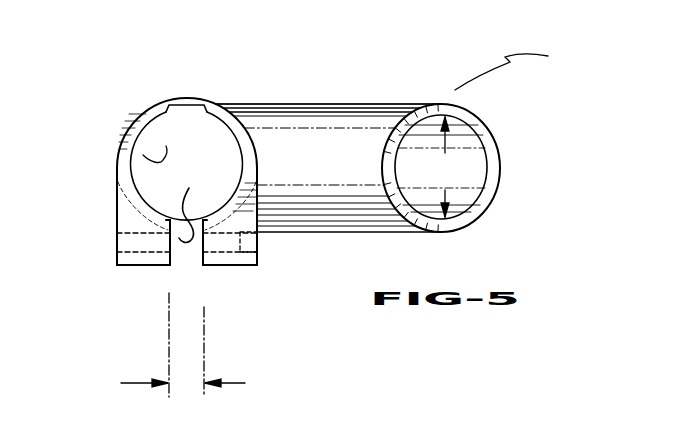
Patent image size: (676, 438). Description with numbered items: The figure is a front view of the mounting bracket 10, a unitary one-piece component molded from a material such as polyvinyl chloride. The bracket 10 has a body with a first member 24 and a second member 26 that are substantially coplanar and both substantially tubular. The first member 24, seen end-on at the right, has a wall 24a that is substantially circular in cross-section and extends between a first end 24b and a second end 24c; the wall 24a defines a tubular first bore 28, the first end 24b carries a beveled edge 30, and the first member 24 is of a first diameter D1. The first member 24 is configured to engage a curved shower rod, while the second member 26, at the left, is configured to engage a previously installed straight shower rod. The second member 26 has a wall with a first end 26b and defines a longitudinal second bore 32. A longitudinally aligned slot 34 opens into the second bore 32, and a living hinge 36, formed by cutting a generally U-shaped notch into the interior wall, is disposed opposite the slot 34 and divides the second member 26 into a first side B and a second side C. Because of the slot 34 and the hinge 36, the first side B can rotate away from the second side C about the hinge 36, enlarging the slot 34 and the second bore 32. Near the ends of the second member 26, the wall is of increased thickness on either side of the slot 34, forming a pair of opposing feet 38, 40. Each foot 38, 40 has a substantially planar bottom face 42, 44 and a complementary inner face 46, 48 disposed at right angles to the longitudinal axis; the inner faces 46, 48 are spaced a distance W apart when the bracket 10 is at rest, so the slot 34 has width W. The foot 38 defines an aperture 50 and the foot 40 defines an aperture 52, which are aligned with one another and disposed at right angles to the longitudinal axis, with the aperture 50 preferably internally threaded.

The mounting bracket 10 is at (515, 68).
The first member 24 is at (303, 103).
The wall 24a is at (343, 117).
The first end 24b is at (492, 132).
The second end 24c is at (233, 104).
The second member 26 is at (125, 127).
The first end 26b is at (158, 110).
The first bore 28 is at (479, 158).
The beveled edge 30 is at (395, 145).
The second bore 32 is at (143, 155).
The slot 34 is at (188, 205).
The living hinge 36 is at (187, 103).
The foot 38 is at (117, 218).
The foot 40 is at (218, 268).
The bottom face 42 is at (135, 266).
The bottom face 44 is at (240, 267).
The inner face 46 is at (170, 263).
The inner face 48 is at (203, 263).
The aperture 50 is at (118, 242).
The aperture 52 is at (255, 248).
The first side B is at (117, 175).
The second side C is at (262, 165).
The first diameter D1 is at (444, 167).
The width W is at (195, 345).